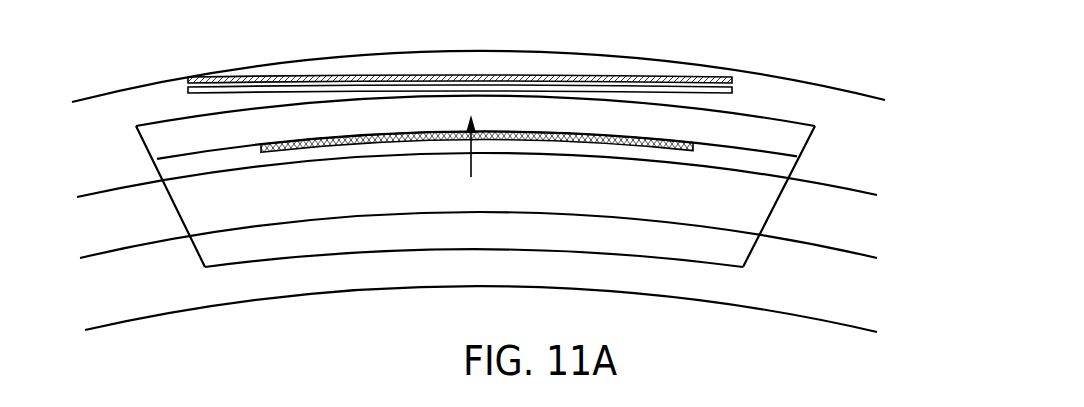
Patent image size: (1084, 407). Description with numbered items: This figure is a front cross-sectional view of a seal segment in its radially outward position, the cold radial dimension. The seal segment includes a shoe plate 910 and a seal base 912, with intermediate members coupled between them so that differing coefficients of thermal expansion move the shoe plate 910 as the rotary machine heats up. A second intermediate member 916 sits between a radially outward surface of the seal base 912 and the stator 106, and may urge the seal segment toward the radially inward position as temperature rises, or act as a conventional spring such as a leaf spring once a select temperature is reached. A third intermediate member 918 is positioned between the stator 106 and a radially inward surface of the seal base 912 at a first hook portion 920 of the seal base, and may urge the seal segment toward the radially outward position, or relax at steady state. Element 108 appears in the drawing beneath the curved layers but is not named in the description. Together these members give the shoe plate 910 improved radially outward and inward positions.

The stator 106 is at (102, 104).
The inner layer 108 is at (126, 301).
The shoe plate 910 is at (732, 247).
The seal base 912 is at (137, 131).
The second intermediate member 916 is at (366, 66).
The third intermediate member 918 is at (699, 151).
The first hook portion 920 is at (571, 88).